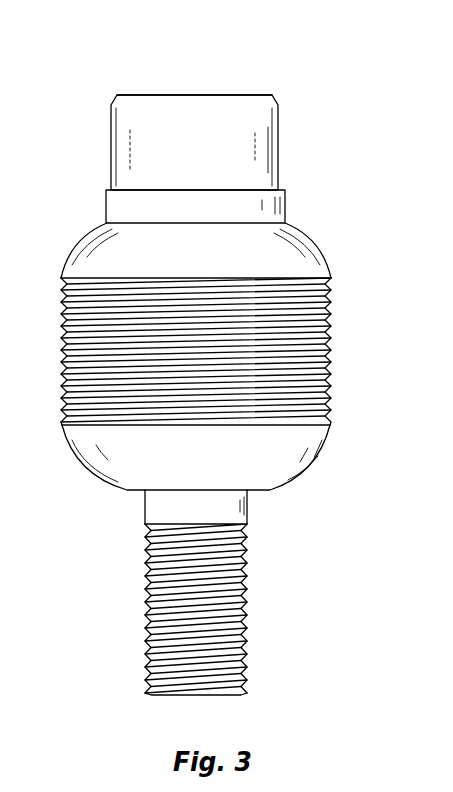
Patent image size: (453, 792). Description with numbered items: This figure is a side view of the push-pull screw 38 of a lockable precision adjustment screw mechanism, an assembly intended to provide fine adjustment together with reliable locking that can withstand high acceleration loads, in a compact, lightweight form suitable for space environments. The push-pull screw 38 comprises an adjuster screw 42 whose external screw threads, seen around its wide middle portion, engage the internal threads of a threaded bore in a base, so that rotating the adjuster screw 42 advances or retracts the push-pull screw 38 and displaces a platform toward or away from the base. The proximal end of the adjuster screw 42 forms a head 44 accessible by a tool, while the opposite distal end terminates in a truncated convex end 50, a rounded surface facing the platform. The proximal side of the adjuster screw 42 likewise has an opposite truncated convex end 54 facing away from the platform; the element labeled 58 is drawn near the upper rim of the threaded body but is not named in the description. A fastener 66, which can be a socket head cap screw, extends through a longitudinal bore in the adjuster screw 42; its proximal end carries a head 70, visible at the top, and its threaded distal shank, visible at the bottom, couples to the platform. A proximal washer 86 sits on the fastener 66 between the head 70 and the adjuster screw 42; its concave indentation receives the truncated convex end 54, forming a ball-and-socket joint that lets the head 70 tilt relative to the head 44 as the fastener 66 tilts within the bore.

The push-pull screw 38 is at (132, 537).
The adjuster screw 42 is at (90, 350).
The head 44 is at (298, 240).
The truncated convex end 50 is at (133, 470).
The truncated convex end 54 is at (98, 245).
The rim of threaded body 58 is at (317, 260).
The fastener 66 is at (168, 93).
The head 70 is at (230, 117).
The proximal washer 86 is at (122, 205).